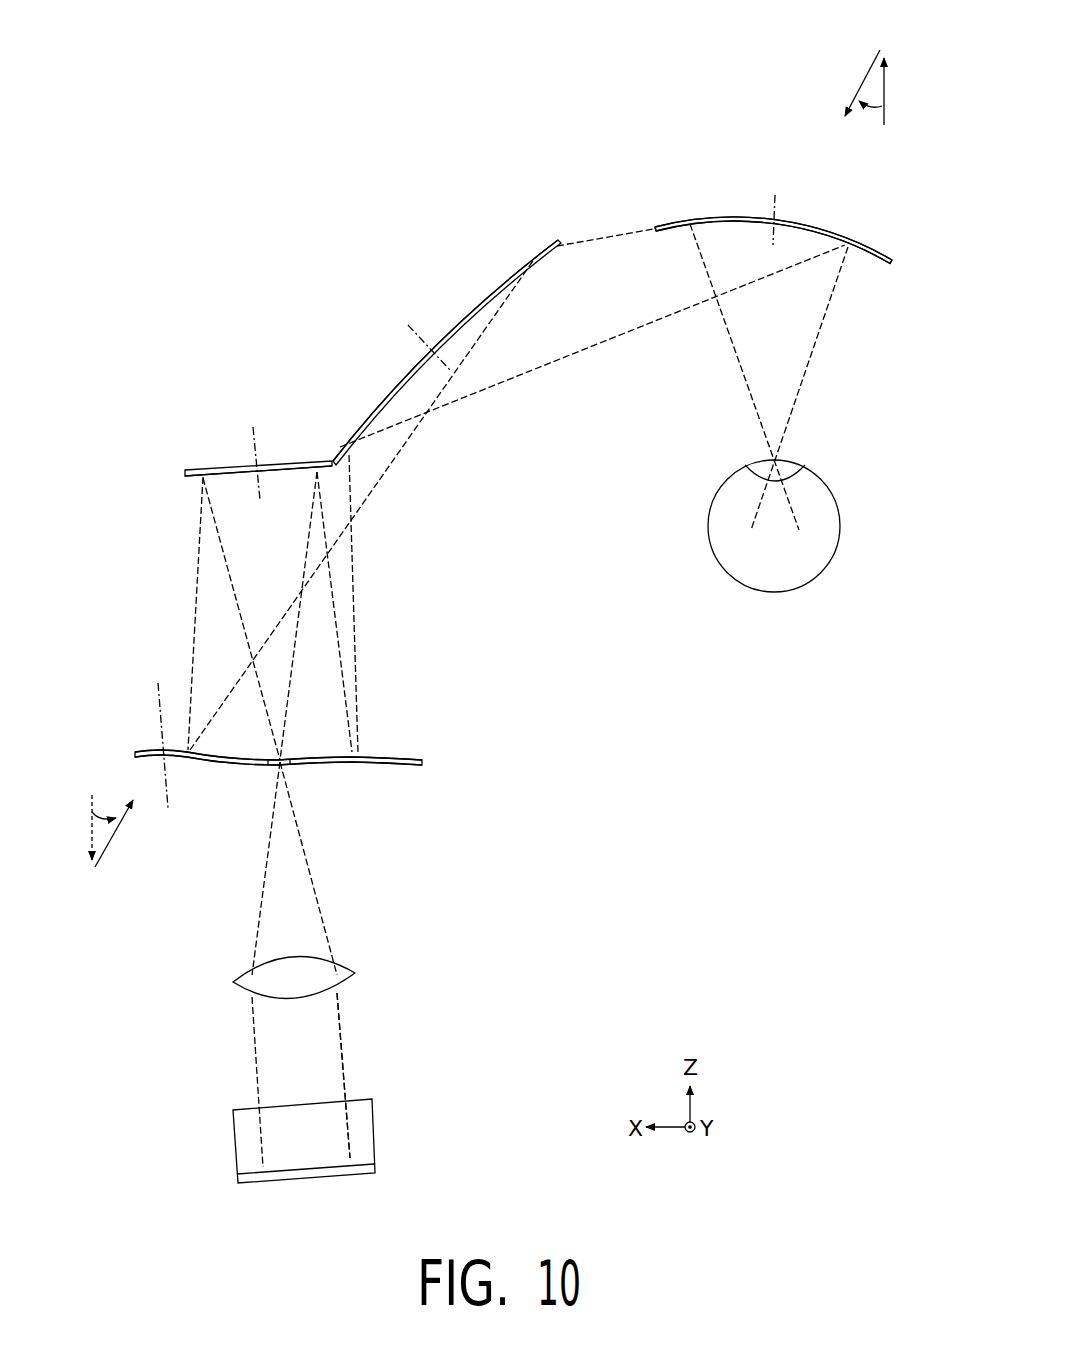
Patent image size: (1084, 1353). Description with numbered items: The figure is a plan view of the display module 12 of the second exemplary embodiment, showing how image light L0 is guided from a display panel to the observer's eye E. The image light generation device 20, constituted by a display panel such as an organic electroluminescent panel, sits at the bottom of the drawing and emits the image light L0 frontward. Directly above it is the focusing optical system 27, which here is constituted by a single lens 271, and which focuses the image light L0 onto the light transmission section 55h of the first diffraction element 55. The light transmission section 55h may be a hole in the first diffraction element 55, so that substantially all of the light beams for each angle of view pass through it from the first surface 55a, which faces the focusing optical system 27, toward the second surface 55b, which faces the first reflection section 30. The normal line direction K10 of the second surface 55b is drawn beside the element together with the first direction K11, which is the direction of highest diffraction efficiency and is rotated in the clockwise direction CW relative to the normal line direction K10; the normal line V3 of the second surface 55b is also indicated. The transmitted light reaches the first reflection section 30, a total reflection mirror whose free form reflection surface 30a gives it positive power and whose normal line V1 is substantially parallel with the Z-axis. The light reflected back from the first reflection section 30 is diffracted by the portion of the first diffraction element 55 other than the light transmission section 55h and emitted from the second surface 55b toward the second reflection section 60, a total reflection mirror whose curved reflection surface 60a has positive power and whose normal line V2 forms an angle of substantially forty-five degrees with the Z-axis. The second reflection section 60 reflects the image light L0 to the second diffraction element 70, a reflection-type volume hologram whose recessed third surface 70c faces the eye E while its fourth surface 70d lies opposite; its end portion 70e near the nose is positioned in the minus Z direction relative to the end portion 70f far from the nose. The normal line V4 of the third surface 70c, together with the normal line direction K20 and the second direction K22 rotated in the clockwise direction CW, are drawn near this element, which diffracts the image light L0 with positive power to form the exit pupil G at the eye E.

The display module 12 is at (356, 268).
The image light generation device 20 is at (337, 1175).
The focusing optical system 27 is at (362, 958).
The lens 271 is at (347, 975).
The first reflection section 30 is at (215, 470).
The reflection surface 30a is at (205, 481).
The first diffraction element 55 is at (423, 765).
The first surface 55a is at (398, 770).
The second surface 55b is at (408, 753).
The light transmission section 55h is at (282, 767).
The second reflection section 60 is at (515, 272).
The reflection surface 60a is at (505, 295).
The second diffraction element 70 is at (722, 217).
The third surface 70c is at (850, 247).
The fourth surface 70d is at (887, 247).
The end portion 70e is at (892, 262).
The end portion 70f is at (655, 227).
The eye E is at (837, 547).
The exit pupil G is at (806, 451).
The normal line direction K10 is at (92, 830).
The first direction K11 is at (113, 838).
The normal line direction K20 is at (885, 90).
The second direction K22 is at (863, 72).
The clockwise direction CW is at (880, 107).
The normal line V1 is at (257, 443).
The normal line V2 is at (408, 325).
The normal line V3 is at (160, 708).
The normal line V4 is at (777, 197).
The image light L0 is at (343, 1028).